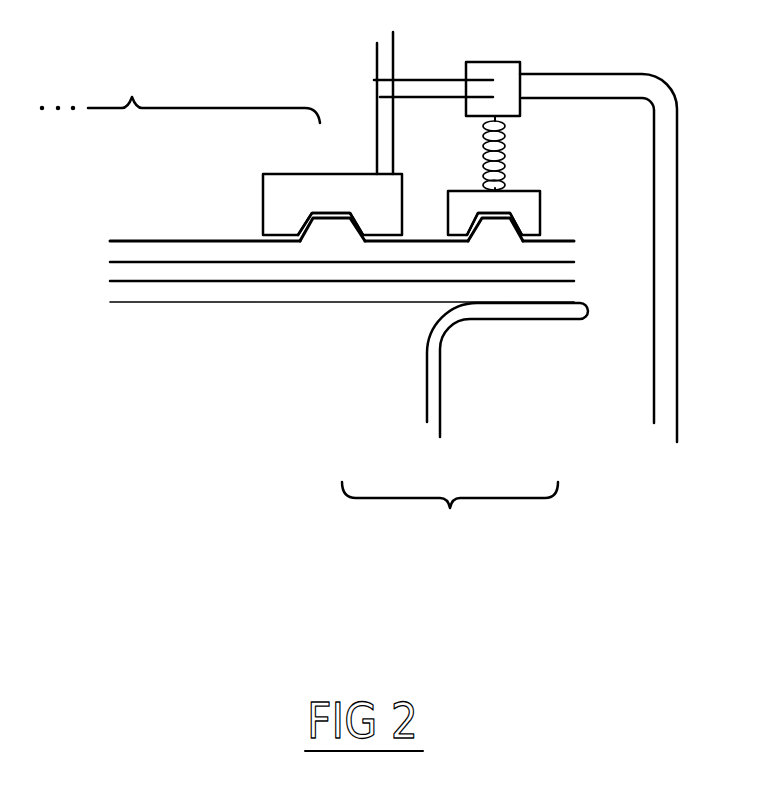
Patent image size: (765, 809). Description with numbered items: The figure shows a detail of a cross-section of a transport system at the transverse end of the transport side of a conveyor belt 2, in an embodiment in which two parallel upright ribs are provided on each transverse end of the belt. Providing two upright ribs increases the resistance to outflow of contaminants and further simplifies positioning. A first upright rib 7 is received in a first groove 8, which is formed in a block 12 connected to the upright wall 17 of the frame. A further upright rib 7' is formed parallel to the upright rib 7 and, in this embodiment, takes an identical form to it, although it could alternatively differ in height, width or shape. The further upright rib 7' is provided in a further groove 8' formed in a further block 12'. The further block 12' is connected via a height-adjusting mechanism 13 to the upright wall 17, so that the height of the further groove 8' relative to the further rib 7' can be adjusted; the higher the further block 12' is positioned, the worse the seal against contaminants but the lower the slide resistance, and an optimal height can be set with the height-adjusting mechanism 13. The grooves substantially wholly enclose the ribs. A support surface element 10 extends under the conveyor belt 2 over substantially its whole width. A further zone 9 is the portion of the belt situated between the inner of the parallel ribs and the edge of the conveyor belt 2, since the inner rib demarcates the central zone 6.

The conveyor belt 2 is at (175, 252).
The central zone 6 is at (180, 88).
The first upright rib 7 is at (341, 301).
The further upright rib 7' is at (522, 316).
The first groove 8 is at (329, 174).
The further groove 8' is at (545, 198).
The further zone 9 is at (450, 521).
The support surface element 10 is at (258, 291).
The block 12 is at (330, 166).
The further block 12' is at (548, 173).
The height-adjusting mechanism 13 is at (495, 147).
The upright wall 17 is at (382, 120).